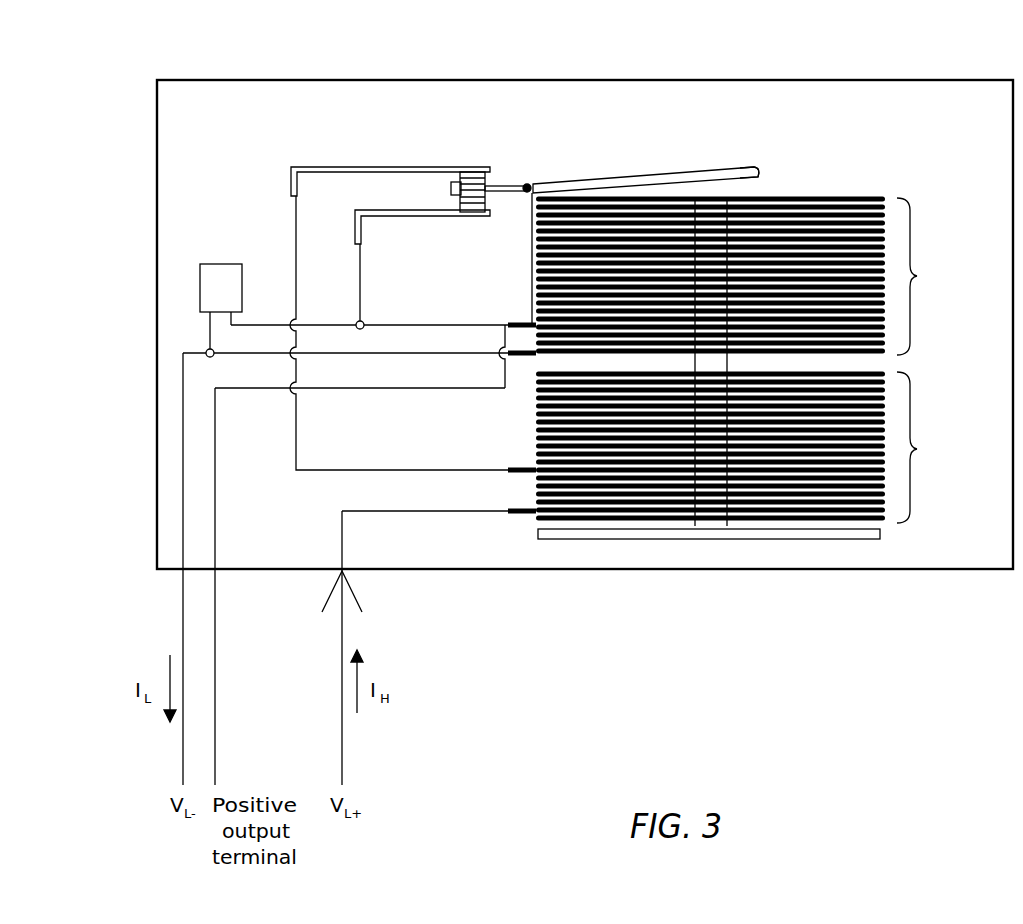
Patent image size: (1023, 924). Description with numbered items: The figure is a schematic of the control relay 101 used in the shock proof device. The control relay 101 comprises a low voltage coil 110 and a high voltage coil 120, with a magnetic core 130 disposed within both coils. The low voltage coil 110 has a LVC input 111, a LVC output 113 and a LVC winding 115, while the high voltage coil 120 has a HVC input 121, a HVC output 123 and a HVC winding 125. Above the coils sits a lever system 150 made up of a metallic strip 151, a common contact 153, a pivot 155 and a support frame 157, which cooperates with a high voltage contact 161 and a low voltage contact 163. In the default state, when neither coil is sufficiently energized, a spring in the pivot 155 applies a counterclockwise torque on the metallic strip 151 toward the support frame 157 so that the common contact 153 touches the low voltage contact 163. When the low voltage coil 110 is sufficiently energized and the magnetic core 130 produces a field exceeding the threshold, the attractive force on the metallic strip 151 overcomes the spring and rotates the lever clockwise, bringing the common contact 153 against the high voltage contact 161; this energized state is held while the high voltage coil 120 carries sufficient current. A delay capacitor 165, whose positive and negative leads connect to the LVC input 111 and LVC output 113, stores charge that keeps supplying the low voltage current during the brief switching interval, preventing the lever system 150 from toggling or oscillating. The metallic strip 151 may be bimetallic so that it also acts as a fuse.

The control relay 101 is at (615, 79).
The low voltage coil 110 is at (749, 276).
The LVC input 111 is at (506, 323).
The LVC output 113 is at (522, 358).
The LVC winding 115 is at (887, 224).
The high voltage coil 120 is at (750, 456).
The HVC input 121 is at (520, 510).
The HVC output 123 is at (522, 468).
The HVC winding 125 is at (887, 400).
The magnetic core 130 is at (733, 238).
The lever system 150 is at (608, 170).
The metallic strip 151 is at (766, 174).
The common contact 153 is at (478, 176).
The pivot 155 is at (529, 184).
The support frame 157 is at (532, 215).
The high voltage contact 161 is at (456, 186).
The low voltage contact 163 is at (462, 208).
The delay capacitor 165 is at (218, 263).